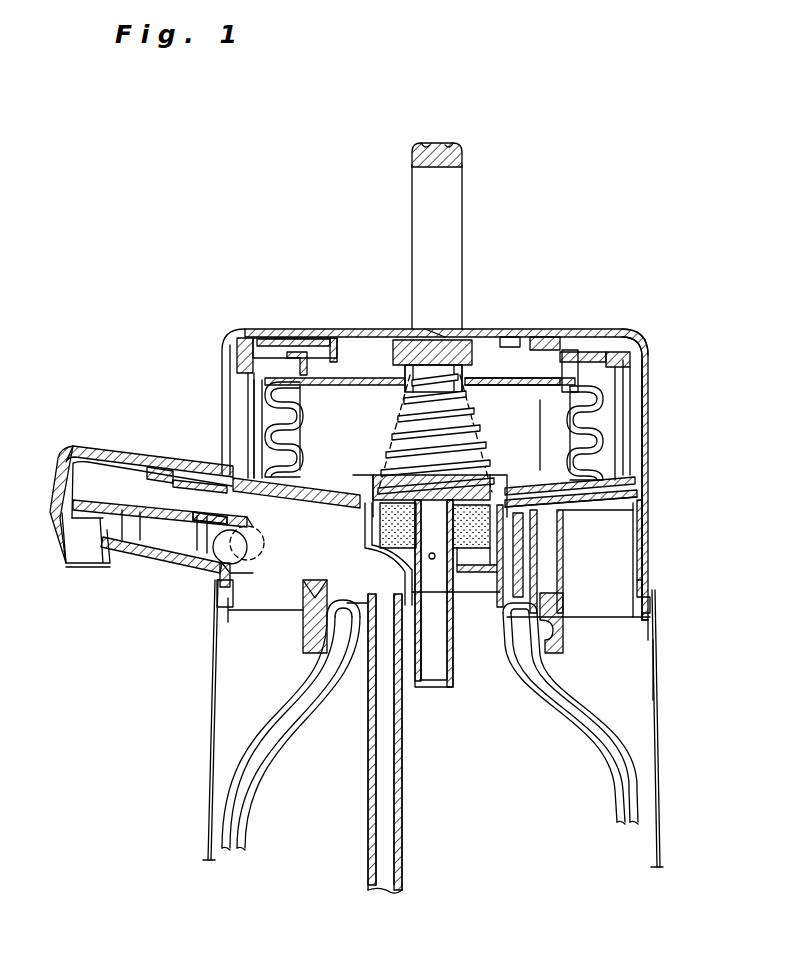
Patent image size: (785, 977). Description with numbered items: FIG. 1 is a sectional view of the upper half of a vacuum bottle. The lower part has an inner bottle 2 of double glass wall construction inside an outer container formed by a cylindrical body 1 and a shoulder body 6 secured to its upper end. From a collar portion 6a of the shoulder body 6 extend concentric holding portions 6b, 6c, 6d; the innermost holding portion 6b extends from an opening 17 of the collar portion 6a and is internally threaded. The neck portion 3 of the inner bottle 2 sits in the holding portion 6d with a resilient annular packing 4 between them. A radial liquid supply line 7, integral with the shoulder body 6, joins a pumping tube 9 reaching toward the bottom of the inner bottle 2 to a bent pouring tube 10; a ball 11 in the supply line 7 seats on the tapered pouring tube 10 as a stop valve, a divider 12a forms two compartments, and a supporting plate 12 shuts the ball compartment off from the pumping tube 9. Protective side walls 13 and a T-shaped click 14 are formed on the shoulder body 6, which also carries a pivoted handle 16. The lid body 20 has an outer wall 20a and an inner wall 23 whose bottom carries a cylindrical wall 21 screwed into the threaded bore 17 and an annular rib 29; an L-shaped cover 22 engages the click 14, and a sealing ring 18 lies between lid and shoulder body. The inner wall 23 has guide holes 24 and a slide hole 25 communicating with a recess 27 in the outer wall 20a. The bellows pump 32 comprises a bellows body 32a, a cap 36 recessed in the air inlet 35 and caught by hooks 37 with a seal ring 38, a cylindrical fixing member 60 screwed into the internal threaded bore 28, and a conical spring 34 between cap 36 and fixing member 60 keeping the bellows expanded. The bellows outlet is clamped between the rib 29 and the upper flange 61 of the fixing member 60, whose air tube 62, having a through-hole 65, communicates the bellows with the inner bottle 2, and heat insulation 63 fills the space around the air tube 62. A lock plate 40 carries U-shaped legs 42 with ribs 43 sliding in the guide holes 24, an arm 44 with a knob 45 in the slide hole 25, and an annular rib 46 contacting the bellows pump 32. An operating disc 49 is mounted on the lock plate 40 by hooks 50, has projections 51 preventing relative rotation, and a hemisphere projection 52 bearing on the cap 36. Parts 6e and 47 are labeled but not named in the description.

The cylindrical body 1 is at (657, 670).
The inner bottle 2 is at (640, 744).
The neck portion 3 is at (528, 672).
The resilient annular packing 4 is at (652, 620).
The shoulder body 6 is at (652, 524).
The collar portion 6a is at (645, 530).
The innermost holding portion 6b is at (650, 604).
The holding portion 6c is at (630, 614).
The holding portion 6d is at (563, 650).
The skirt wall 6e is at (642, 566).
The liquid supply line 7 is at (275, 598).
The pumping tube 9 is at (400, 780).
The pouring tube 10 is at (150, 562).
The ball 11 is at (215, 557).
The supporting plate 12 is at (225, 567).
The divider 12a is at (222, 582).
The protective side walls 13 is at (87, 490).
The T-shaped click 14 is at (160, 468).
The handle 16 is at (452, 190).
The internal threaded bore 17 is at (515, 567).
The sealing ring 18 is at (538, 530).
The lid body 20 is at (650, 343).
The outer wall 20a is at (648, 350).
The cylindrical wall 21 is at (500, 602).
The L-shaped cover 22 is at (100, 445).
The inner wall 23 is at (222, 470).
The inversed L-shaped guide hole 24 is at (630, 420).
The slide hole 25 is at (252, 395).
The recess 27 is at (225, 350).
The internal threaded bore 28 is at (460, 542).
The annular rib 29 is at (535, 510).
The bellows pump 32 is at (600, 468).
The bellows body 32a is at (268, 385).
The conical spring 34 is at (385, 480).
The air inlet 35 is at (405, 378).
The cap 36 is at (425, 345).
The hooks 37 is at (410, 388).
The seal ring 38 is at (402, 345).
The lock plate 40 is at (585, 352).
The U-shaped leg 42 is at (630, 360).
The rib 43 is at (643, 350).
The arm 44 is at (290, 340).
The knob 45 is at (240, 345).
The annular rib 46 is at (572, 380).
The guide plate 47 is at (530, 385).
The operating disc 49 is at (340, 338).
The hooks 50 is at (548, 337).
The projections 51 is at (510, 337).
The hemisphere projection 52 is at (440, 333).
The cylindrical fixing member 60 is at (450, 464).
The upper flange 61 is at (490, 484).
The air tube 62 is at (452, 667).
The heat insulation 63 is at (432, 559).
The through-hole 65 is at (432, 642).